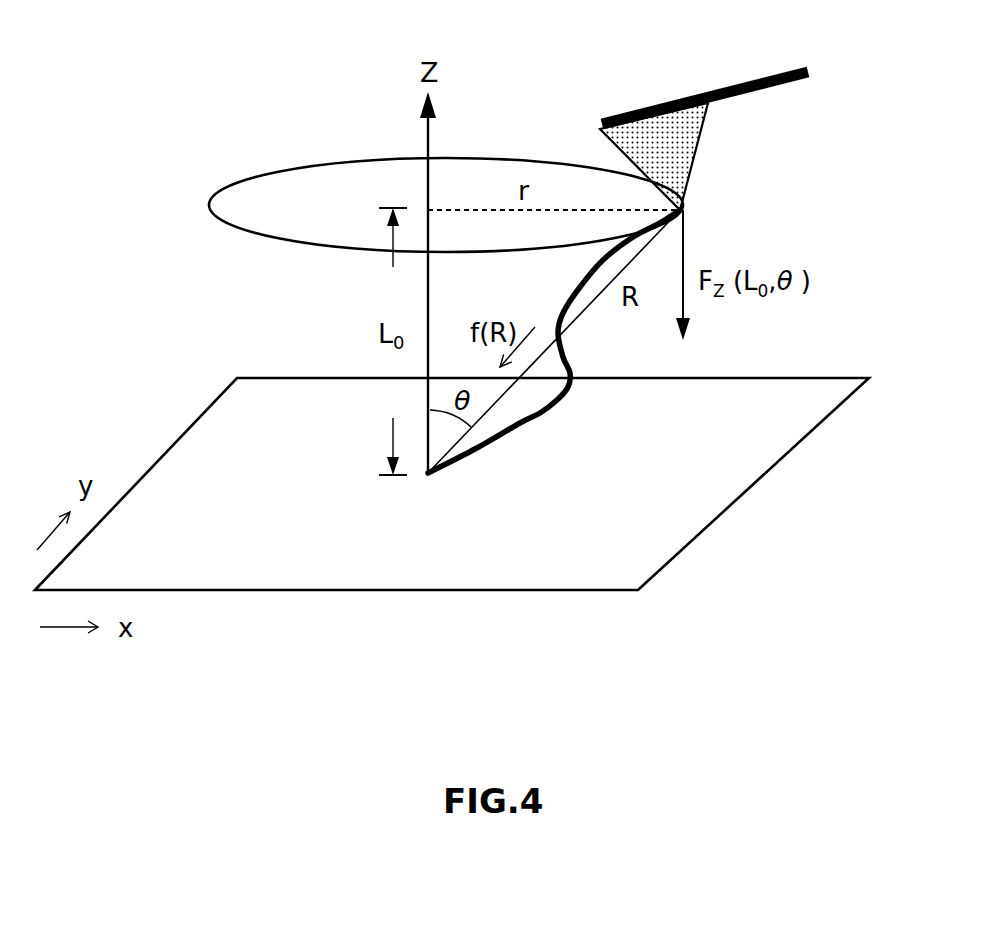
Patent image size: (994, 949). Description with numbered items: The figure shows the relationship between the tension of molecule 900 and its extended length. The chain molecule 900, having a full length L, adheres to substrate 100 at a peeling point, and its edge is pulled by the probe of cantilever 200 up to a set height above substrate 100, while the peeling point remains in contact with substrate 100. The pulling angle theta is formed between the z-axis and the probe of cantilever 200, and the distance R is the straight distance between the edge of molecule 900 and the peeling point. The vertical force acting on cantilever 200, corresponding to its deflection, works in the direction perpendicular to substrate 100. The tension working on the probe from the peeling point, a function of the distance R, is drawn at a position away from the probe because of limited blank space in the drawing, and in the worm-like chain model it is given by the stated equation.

The substrate 100 is at (738, 377).
The cantilever 200 is at (738, 82).
The molecule 900 is at (567, 363).